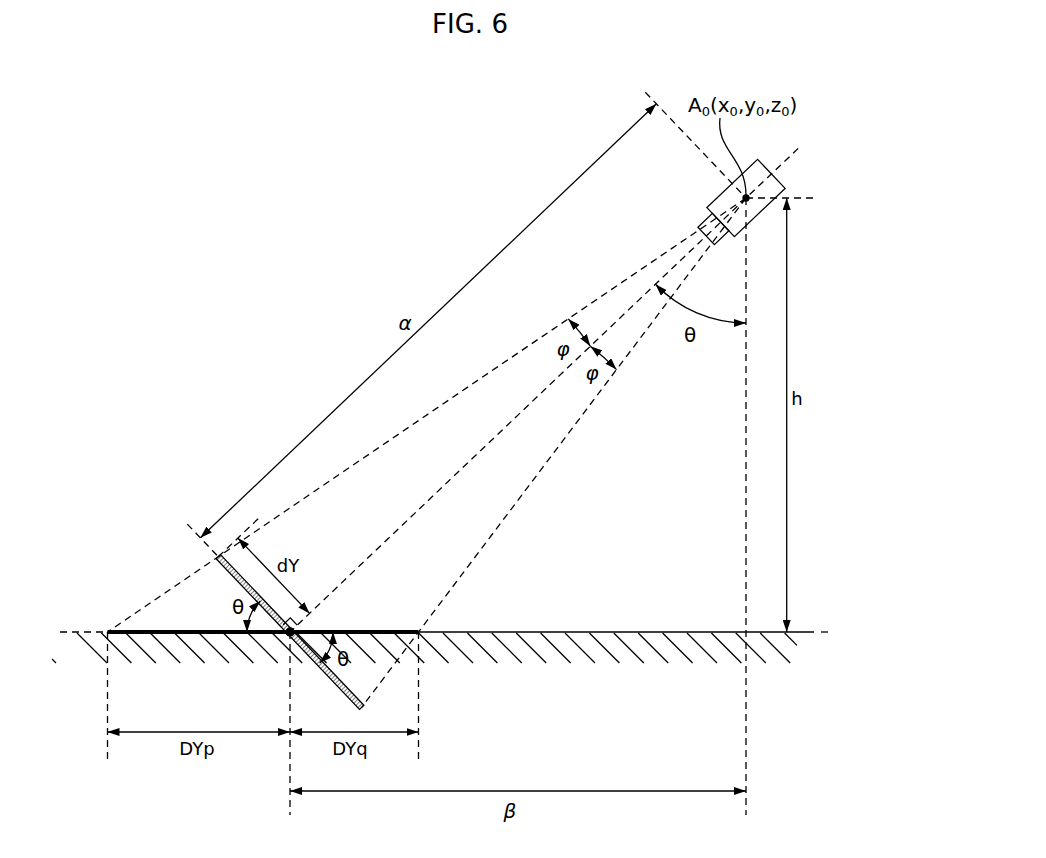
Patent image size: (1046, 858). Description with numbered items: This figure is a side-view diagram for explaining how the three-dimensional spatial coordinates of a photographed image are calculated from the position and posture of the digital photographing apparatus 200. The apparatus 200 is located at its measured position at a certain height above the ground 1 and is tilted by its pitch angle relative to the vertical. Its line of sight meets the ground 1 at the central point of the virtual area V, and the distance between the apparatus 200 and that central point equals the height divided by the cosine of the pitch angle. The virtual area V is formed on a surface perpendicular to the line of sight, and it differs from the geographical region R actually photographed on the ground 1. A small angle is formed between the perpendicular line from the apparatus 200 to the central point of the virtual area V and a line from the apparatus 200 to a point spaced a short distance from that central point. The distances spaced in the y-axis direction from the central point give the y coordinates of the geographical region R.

The digital photographing apparatus 200 is at (784, 180).
The ground 1 is at (447, 609).
The geographical region R is at (217, 578).
The virtual area V is at (152, 630).